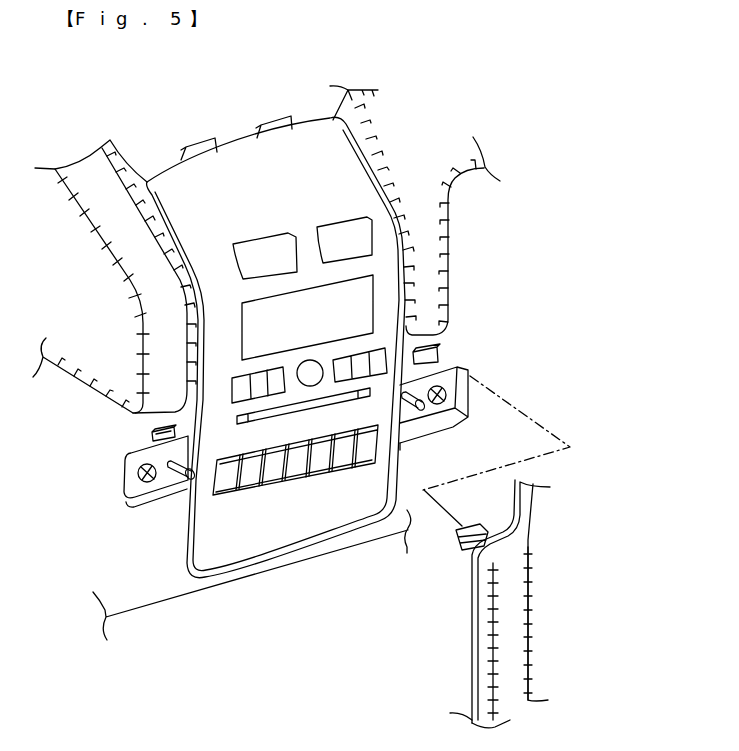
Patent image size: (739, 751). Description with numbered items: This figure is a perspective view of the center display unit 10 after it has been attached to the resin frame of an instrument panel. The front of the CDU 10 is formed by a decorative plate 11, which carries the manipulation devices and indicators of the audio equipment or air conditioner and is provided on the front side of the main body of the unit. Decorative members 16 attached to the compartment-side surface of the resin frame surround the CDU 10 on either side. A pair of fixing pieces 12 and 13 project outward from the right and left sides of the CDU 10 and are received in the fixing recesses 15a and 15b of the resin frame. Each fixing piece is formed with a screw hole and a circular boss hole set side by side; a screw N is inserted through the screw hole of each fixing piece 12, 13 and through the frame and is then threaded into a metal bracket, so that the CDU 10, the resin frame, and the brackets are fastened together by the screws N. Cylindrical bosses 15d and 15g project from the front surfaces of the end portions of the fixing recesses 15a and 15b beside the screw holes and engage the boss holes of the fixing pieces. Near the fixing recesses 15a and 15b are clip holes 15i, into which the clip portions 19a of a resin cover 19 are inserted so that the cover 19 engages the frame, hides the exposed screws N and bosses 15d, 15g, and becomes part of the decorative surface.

The center display unit 10 is at (236, 129).
The decorative plate 11 is at (330, 138).
The fixing piece 12 is at (435, 412).
The fixing piece 13 is at (168, 480).
The fixing recess 15a is at (470, 372).
The fixing recess 15b is at (126, 455).
The cylindrical boss 15d is at (423, 413).
The cylindrical boss 15g is at (184, 492).
The clip hole 15i is at (440, 357).
The decorative member 16 is at (450, 242).
The resin cover 19 is at (467, 637).
The clip portion 19a is at (456, 533).
The screw N is at (445, 398).